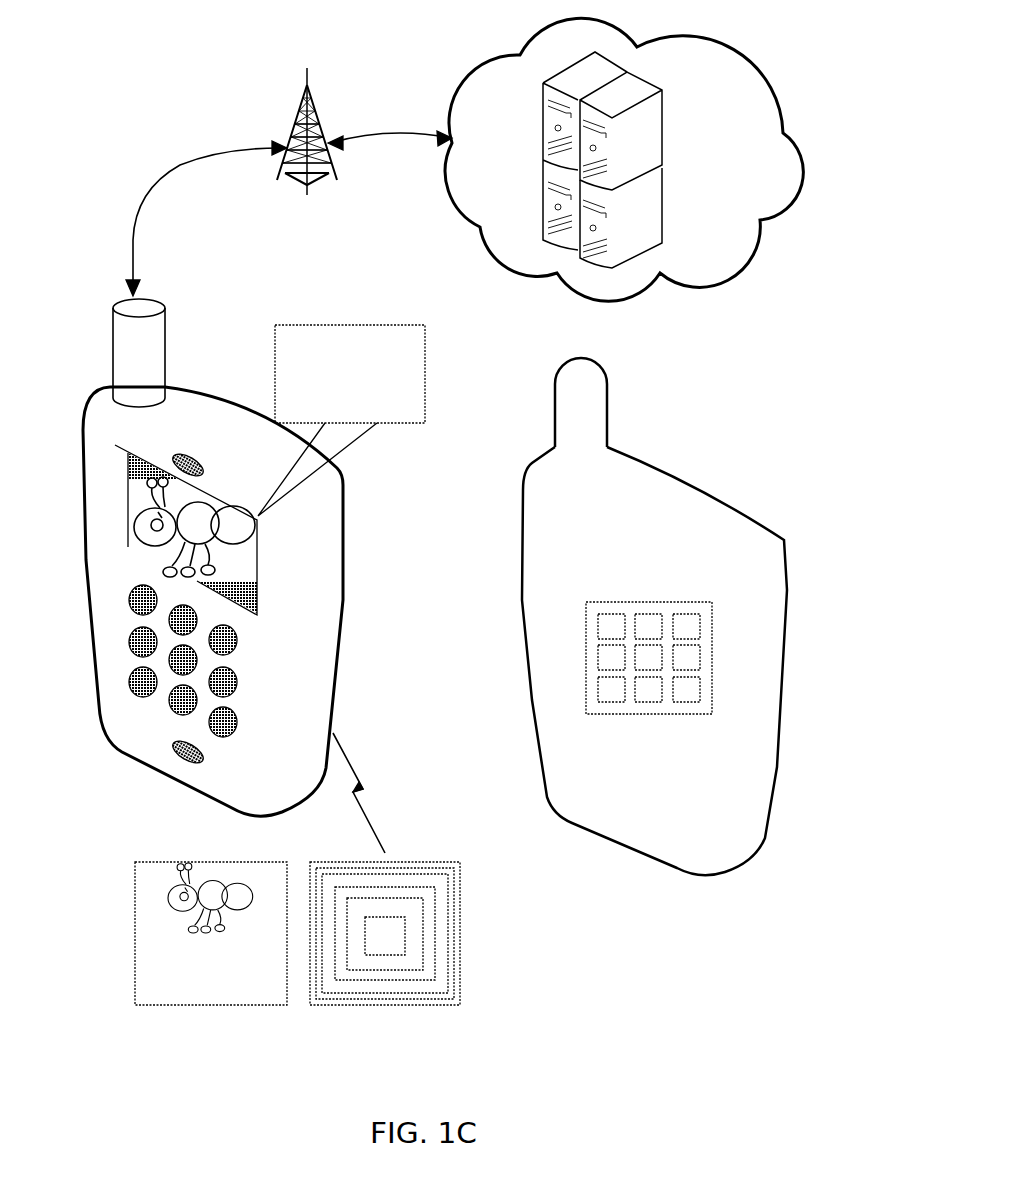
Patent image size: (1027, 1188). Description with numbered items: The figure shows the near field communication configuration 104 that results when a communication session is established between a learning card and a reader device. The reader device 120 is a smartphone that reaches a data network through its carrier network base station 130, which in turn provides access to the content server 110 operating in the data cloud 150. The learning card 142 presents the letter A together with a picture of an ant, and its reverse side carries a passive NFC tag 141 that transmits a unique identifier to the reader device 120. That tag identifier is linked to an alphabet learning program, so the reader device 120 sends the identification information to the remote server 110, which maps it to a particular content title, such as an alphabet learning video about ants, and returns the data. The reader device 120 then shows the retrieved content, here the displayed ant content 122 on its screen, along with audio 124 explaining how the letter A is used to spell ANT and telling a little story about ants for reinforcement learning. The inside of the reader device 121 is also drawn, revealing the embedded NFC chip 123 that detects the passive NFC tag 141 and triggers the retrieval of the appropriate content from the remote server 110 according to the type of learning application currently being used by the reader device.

The communication system 104 is at (66, 46).
The content server 110 is at (663, 122).
The reader device 120 is at (343, 488).
The inside of the reader device 121 is at (786, 548).
The displayed image content 122 is at (247, 553).
The embedded NFC chip 123 is at (657, 715).
The audio 124 is at (425, 360).
The base station 130 is at (307, 86).
The NFC tag 141 is at (403, 1005).
The learning card 142 is at (228, 1005).
The data cloud 150 is at (716, 287).